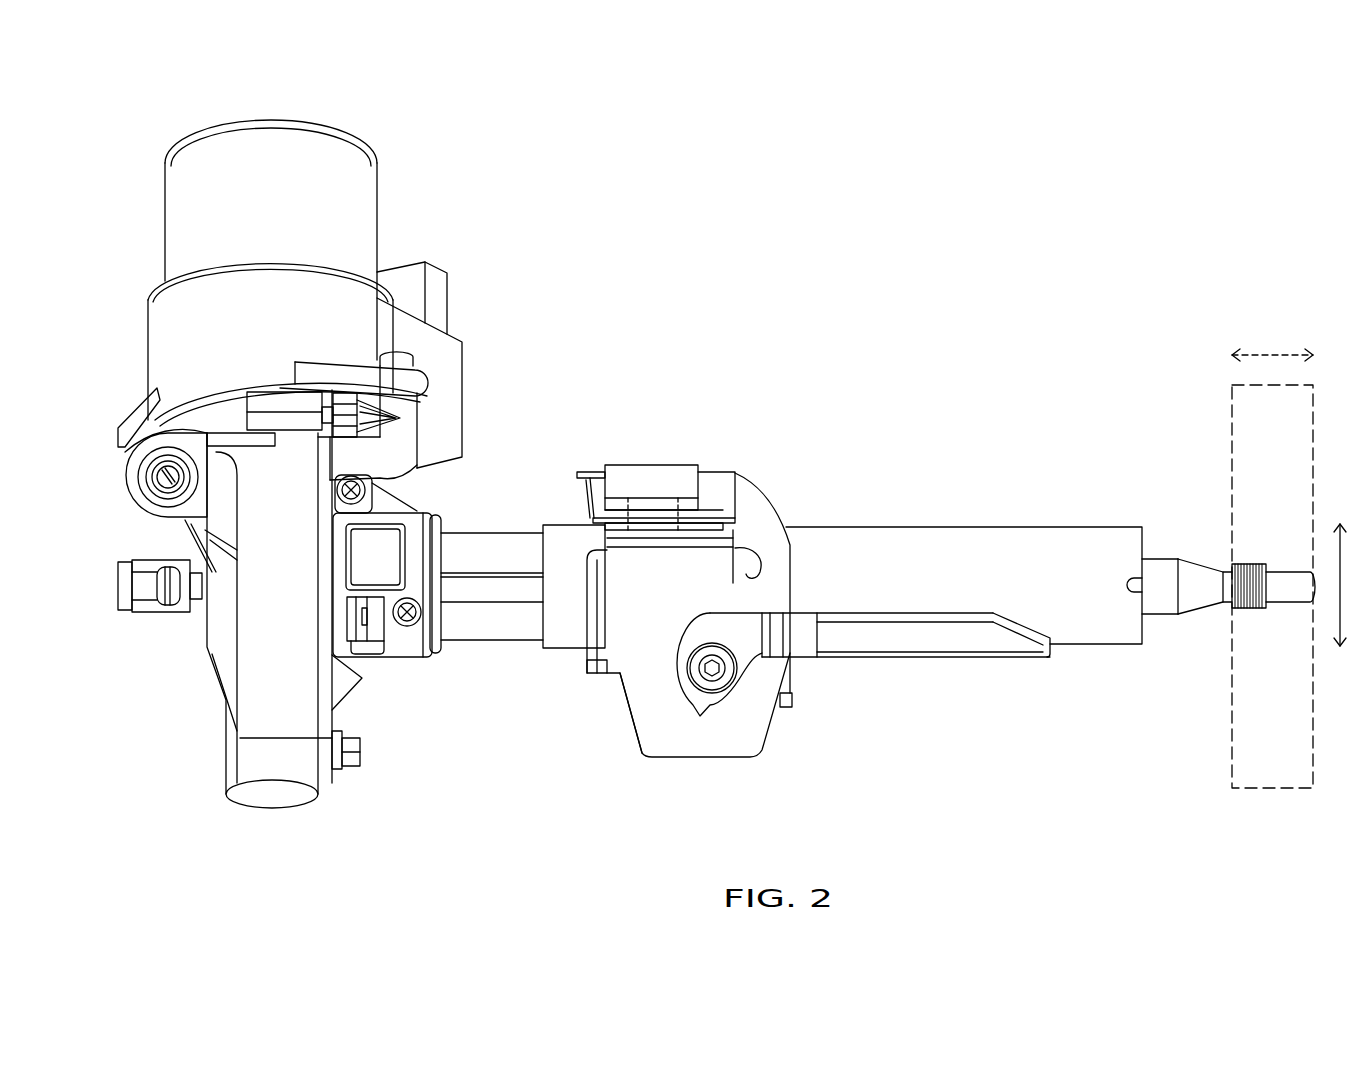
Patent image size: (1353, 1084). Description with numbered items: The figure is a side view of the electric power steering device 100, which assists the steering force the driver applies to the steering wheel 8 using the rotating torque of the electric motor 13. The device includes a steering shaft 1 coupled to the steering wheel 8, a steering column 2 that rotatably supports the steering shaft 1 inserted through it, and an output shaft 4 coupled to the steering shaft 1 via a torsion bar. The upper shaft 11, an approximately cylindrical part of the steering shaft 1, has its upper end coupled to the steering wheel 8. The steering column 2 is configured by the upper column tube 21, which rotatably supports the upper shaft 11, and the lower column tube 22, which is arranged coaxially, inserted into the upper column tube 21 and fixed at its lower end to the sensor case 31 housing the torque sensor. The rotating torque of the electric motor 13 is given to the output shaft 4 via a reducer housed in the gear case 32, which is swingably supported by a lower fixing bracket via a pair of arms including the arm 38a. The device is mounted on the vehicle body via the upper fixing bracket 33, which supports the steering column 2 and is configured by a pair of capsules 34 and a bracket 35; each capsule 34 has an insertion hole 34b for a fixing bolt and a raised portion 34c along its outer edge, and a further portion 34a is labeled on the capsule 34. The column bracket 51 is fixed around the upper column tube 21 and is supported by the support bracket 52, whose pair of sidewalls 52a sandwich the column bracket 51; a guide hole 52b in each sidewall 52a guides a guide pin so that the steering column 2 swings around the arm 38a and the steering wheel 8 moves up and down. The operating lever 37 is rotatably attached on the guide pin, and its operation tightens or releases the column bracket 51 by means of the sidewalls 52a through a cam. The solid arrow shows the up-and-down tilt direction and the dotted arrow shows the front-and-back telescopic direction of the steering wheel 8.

The electric power steering device 100 is at (1141, 284).
The electric motor 13 is at (345, 160).
The gear case 32 is at (258, 722).
The arm 38a is at (150, 483).
The output shaft 4 is at (198, 608).
The sensor case 31 is at (405, 655).
The lower column tube 22 is at (498, 545).
The upper fixing bracket 33 is at (692, 405).
The capsule 34 is at (710, 512).
The first plate portion 34a is at (618, 515).
The insertion hole 34b is at (672, 525).
The raised portion 34c is at (677, 505).
The bracket 35 is at (593, 480).
The support bracket 52 is at (759, 758).
The sidewall 52a is at (651, 757).
The guide hole 52b is at (704, 718).
The column bracket 51 is at (793, 700).
The operating lever 37 is at (1012, 640).
The steering column 2 is at (1072, 517).
The upper column tube 21 is at (960, 527).
The steering shaft 1 is at (1166, 550).
The upper shaft 11 is at (1197, 600).
The steering wheel 8 is at (1268, 788).